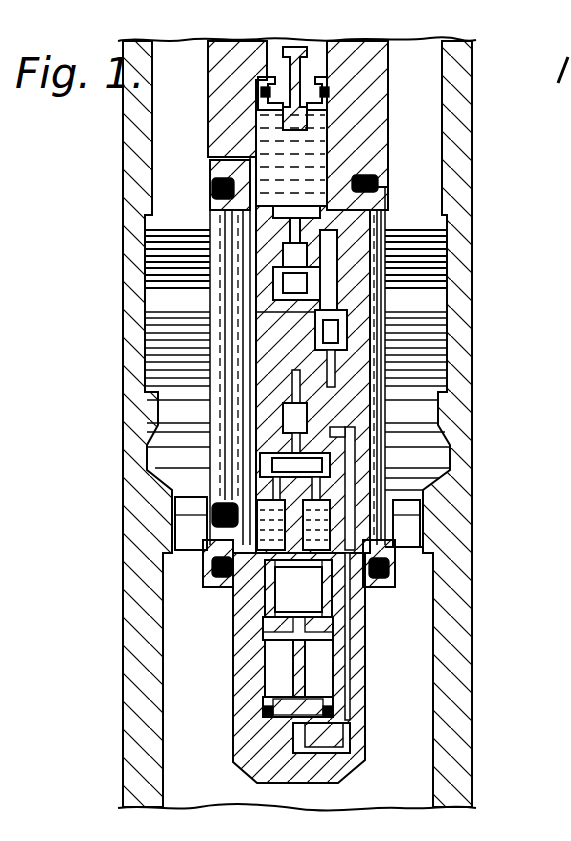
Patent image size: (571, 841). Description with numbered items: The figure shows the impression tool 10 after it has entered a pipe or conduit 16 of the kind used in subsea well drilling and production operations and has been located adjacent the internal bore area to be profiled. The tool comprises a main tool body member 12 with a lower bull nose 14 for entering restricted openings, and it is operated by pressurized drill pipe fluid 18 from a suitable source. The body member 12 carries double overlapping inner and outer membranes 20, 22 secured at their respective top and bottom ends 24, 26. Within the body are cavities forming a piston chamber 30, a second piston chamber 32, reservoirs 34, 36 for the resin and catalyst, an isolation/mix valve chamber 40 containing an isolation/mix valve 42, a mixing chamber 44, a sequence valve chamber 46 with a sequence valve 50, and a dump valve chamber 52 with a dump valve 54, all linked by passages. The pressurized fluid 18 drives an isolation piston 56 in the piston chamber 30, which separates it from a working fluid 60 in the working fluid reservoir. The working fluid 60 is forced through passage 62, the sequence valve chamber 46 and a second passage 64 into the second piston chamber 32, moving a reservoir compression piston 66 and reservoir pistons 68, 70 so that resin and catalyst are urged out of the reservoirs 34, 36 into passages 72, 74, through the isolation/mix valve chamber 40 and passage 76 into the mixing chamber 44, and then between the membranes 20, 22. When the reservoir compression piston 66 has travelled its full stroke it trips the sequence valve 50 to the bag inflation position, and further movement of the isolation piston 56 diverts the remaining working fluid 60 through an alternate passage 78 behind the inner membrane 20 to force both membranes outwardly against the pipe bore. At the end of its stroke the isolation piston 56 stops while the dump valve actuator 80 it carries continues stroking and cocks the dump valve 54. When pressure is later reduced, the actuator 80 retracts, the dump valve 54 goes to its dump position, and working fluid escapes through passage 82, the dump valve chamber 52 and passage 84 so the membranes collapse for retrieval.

The impression tool 10 is at (389, 297).
The main tool body member 12 is at (386, 375).
The lower bull nose 14 is at (236, 763).
The pipe or conduit 16 is at (462, 465).
The pressurized drill pipe fluid 18 is at (340, 56).
The inner membrane 20 is at (222, 326).
The outer membrane 22 is at (222, 364).
The top end of membranes 24 is at (380, 184).
The bottom end of membranes 26 is at (394, 524).
The piston chamber 30 is at (322, 149).
The second piston chamber 32 is at (322, 664).
The resin reservoir 34 is at (233, 596).
The catalyst reservoir 36 is at (400, 547).
The isolation/mix valve chamber 40 is at (262, 466).
The isolation/mix valve 42 is at (258, 506).
The mixing chamber 44 is at (286, 420).
The sequence valve chamber 46 is at (340, 326).
The sequence valve 50 is at (340, 333).
The dump valve chamber 52 is at (395, 250).
The dump valve 54 is at (300, 280).
The isolation piston 56 is at (328, 88).
The working fluid 60 is at (267, 138).
The passage 62 is at (386, 212).
The second passage 64 is at (383, 437).
The reservoir compression piston 66 is at (328, 723).
The reservoir piston 68 is at (238, 622).
The reservoir piston 70 is at (367, 594).
The passage 72 is at (216, 503).
The passage 74 is at (421, 489).
The passage 76 is at (285, 450).
The alternate passage 78 is at (240, 318).
The dump valve actuator 80 is at (262, 74).
The passage 82 is at (292, 236).
The passage 84 is at (212, 156).